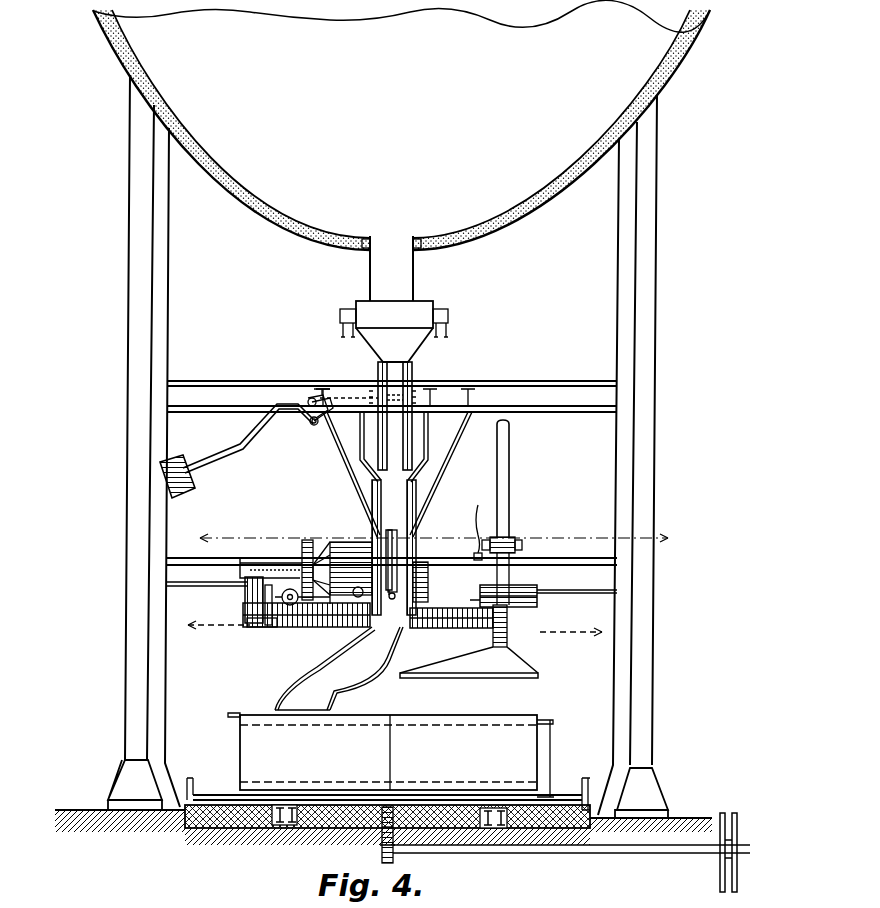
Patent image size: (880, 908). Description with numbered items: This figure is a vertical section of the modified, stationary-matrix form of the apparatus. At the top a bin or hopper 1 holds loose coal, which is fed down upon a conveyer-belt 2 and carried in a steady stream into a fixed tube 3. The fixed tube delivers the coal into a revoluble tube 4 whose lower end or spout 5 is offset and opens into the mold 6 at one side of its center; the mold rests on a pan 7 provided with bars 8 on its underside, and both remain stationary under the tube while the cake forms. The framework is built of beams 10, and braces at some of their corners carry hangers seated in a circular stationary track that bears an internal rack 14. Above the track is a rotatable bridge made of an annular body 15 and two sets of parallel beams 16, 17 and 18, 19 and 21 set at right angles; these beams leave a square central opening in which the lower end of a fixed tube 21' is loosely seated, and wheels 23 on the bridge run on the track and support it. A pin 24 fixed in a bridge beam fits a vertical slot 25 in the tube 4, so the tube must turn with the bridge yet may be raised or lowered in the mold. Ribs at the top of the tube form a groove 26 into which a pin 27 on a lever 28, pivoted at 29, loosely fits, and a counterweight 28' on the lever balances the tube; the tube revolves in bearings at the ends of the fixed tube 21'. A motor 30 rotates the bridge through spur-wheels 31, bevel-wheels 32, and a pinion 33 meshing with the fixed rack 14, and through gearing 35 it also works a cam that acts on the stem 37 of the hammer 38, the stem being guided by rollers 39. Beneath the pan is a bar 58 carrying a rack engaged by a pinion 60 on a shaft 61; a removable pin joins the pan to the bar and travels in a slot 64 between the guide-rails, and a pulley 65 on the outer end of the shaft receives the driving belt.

The bin or hopper 1 is at (528, 206).
The conveyer-belt 2 is at (428, 303).
The fixed tube 3 is at (413, 372).
The revoluble tube 4 is at (412, 508).
The spout 5 is at (280, 699).
The mold 6 is at (243, 740).
The pan 7 is at (563, 796).
The bars 8 is at (290, 828).
The beams 10 is at (392, 566).
The internal rack 14 is at (437, 622).
The annular body 15 is at (246, 594).
The parallel beam 16 is at (357, 600).
The parallel beam 17 is at (422, 578).
The parallel beam 18 is at (537, 598).
The parallel beam 19 is at (338, 612).
The parallel beam 21 is at (447, 486).
The fixed tube 21' is at (346, 474).
The wheels 23 is at (306, 624).
The pin 24 is at (391, 600).
The slot 25 is at (418, 540).
The groove 26 is at (377, 392).
The pin 27 is at (395, 396).
The lever 28 is at (258, 411).
The counterweight 28' is at (186, 462).
The pivot 29 is at (313, 425).
The motor 30 is at (350, 545).
The spur-wheels 31 is at (306, 540).
The bevel-wheels 32 is at (290, 558).
The pinion 33 is at (265, 628).
The gearing 35 is at (480, 522).
The stem 37 is at (509, 452).
The hammer 38 is at (528, 677).
The rollers 39 is at (510, 537).
The bar 58 is at (361, 847).
The pinion 60 is at (396, 862).
The shaft 61 is at (605, 854).
The slot 64 is at (393, 808).
The pulley 65 is at (738, 823).